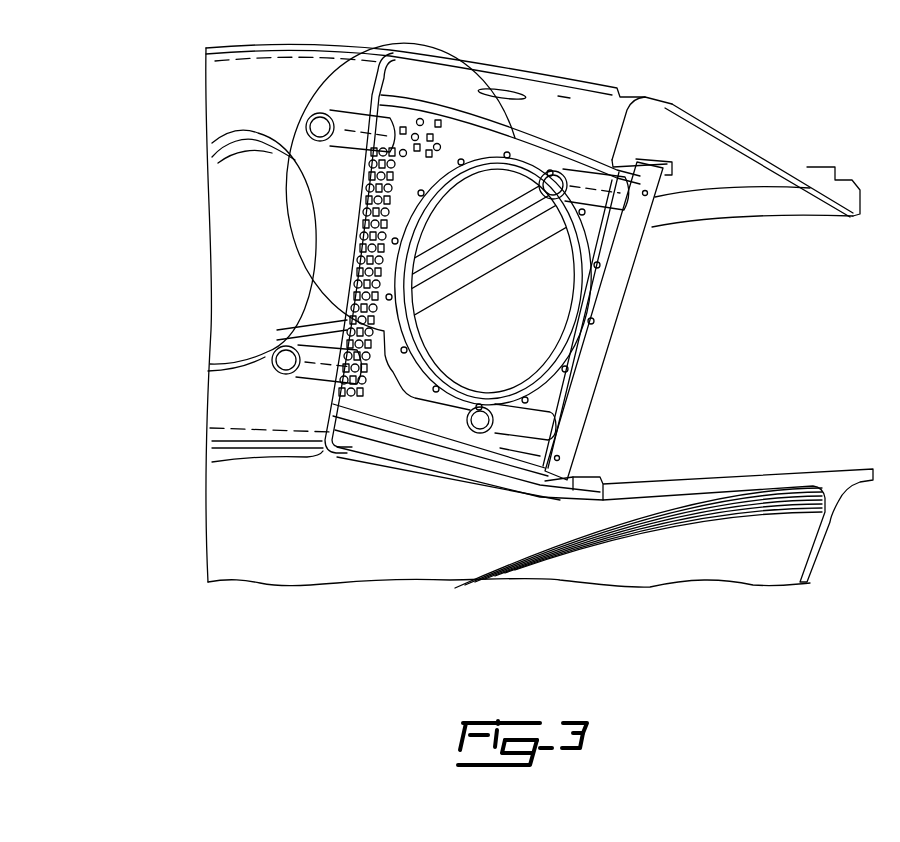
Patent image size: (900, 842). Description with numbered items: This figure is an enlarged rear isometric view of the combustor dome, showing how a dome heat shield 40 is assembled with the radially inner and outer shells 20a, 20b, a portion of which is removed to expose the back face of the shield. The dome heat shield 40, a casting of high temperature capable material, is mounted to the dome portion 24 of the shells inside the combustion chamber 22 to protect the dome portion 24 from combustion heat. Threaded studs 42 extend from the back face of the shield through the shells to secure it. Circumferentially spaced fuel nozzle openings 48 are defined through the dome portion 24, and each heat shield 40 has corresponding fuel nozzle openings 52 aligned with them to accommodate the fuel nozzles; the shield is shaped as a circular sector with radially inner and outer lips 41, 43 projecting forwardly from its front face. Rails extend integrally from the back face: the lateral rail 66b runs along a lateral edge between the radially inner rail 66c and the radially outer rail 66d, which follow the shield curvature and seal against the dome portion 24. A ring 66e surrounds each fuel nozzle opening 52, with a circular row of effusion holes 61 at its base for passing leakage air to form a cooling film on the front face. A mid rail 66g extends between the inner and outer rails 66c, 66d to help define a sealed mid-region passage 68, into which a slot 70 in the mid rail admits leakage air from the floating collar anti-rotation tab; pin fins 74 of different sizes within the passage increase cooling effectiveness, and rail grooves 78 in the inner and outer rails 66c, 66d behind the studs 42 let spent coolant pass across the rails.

The inner shell 20a is at (213, 462).
The outer shell 20b is at (503, 65).
The combustion chamber 22 is at (752, 347).
The dome portion 24 is at (170, 278).
The dome heat shield 40 is at (628, 313).
The radially inner lip 41 is at (585, 472).
The threaded studs 42 is at (344, 114).
The radially outer lip 43 is at (693, 153).
The fuel nozzle openings 48 is at (222, 223).
The fuel nozzle opening 52 is at (523, 349).
The effusion holes 61 is at (597, 282).
The lateral rail 66b is at (590, 352).
The radially inner rail 66c is at (423, 415).
The radially outer rail 66d is at (523, 133).
The ring 66e is at (570, 270).
The mid rail 66g is at (373, 311).
The mid-region passage 68 is at (213, 162).
The slot 70 is at (420, 257).
The pin fins 74 is at (438, 123).
The rail grooves 78 is at (613, 168).